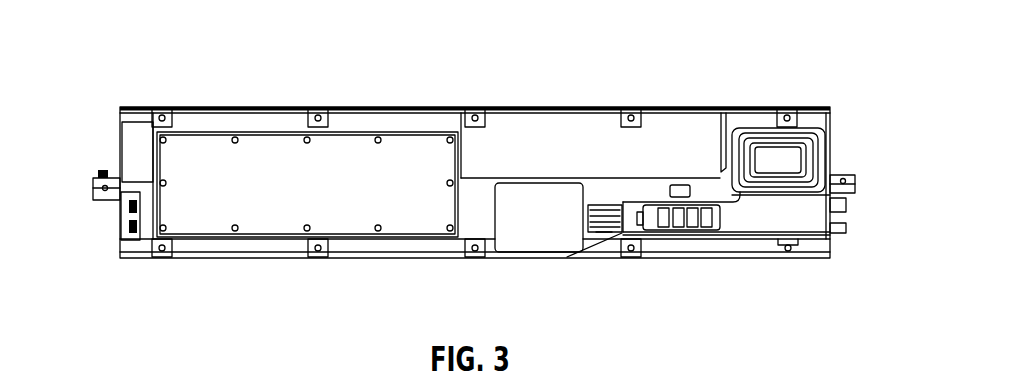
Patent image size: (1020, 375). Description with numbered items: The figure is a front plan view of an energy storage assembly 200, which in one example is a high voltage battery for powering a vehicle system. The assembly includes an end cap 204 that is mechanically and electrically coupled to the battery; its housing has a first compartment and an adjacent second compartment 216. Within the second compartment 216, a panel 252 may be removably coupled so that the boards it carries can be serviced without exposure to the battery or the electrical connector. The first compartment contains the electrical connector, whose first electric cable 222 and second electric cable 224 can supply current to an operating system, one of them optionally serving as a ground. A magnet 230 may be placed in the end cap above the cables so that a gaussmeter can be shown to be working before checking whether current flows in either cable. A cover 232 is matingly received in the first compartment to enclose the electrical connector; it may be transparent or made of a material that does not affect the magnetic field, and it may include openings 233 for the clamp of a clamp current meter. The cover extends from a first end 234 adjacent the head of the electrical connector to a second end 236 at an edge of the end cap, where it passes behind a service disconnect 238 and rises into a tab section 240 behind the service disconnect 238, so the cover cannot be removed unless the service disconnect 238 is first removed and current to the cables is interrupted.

The energy storage assembly 200 is at (745, 51).
The second compartment 216 is at (157, 47).
The end cap 204 is at (111, 119).
The panel 252 is at (272, 148).
The first end 234 is at (505, 196).
The first electric cable 222 is at (622, 205).
The second electric cable 224 is at (622, 203).
The magnet 230 is at (681, 197).
The service disconnect 238 is at (797, 160).
The tab section 240 is at (830, 182).
The second end 236 is at (818, 227).
The cover 232 is at (583, 235).
The openings 233 is at (603, 236).